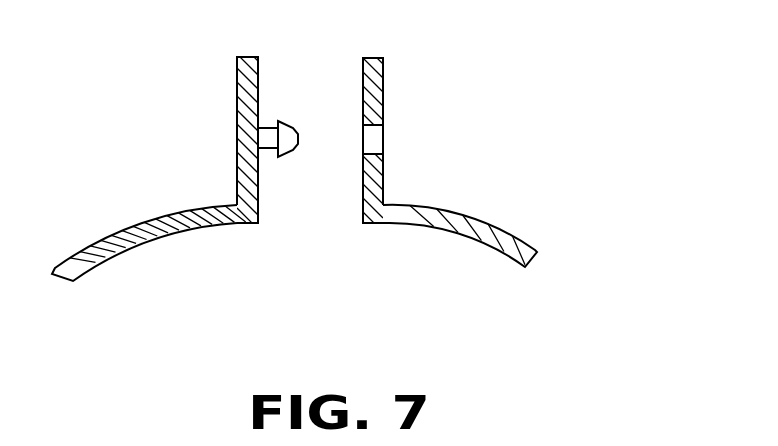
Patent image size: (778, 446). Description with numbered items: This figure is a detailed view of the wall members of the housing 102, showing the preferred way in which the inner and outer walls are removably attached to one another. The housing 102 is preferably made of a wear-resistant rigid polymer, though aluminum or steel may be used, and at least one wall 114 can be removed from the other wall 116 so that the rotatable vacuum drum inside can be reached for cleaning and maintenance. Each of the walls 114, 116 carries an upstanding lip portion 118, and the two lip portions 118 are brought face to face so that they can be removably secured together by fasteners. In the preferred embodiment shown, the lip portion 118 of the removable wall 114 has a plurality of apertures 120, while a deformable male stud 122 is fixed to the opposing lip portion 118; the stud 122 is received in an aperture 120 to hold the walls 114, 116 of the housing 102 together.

The housing 102 is at (565, 146).
The removable wall 114 is at (437, 210).
The other wall 116 is at (178, 210).
The lip portion 118 is at (238, 65).
The aperture 120 is at (384, 138).
The deformable male stud 122 is at (288, 125).